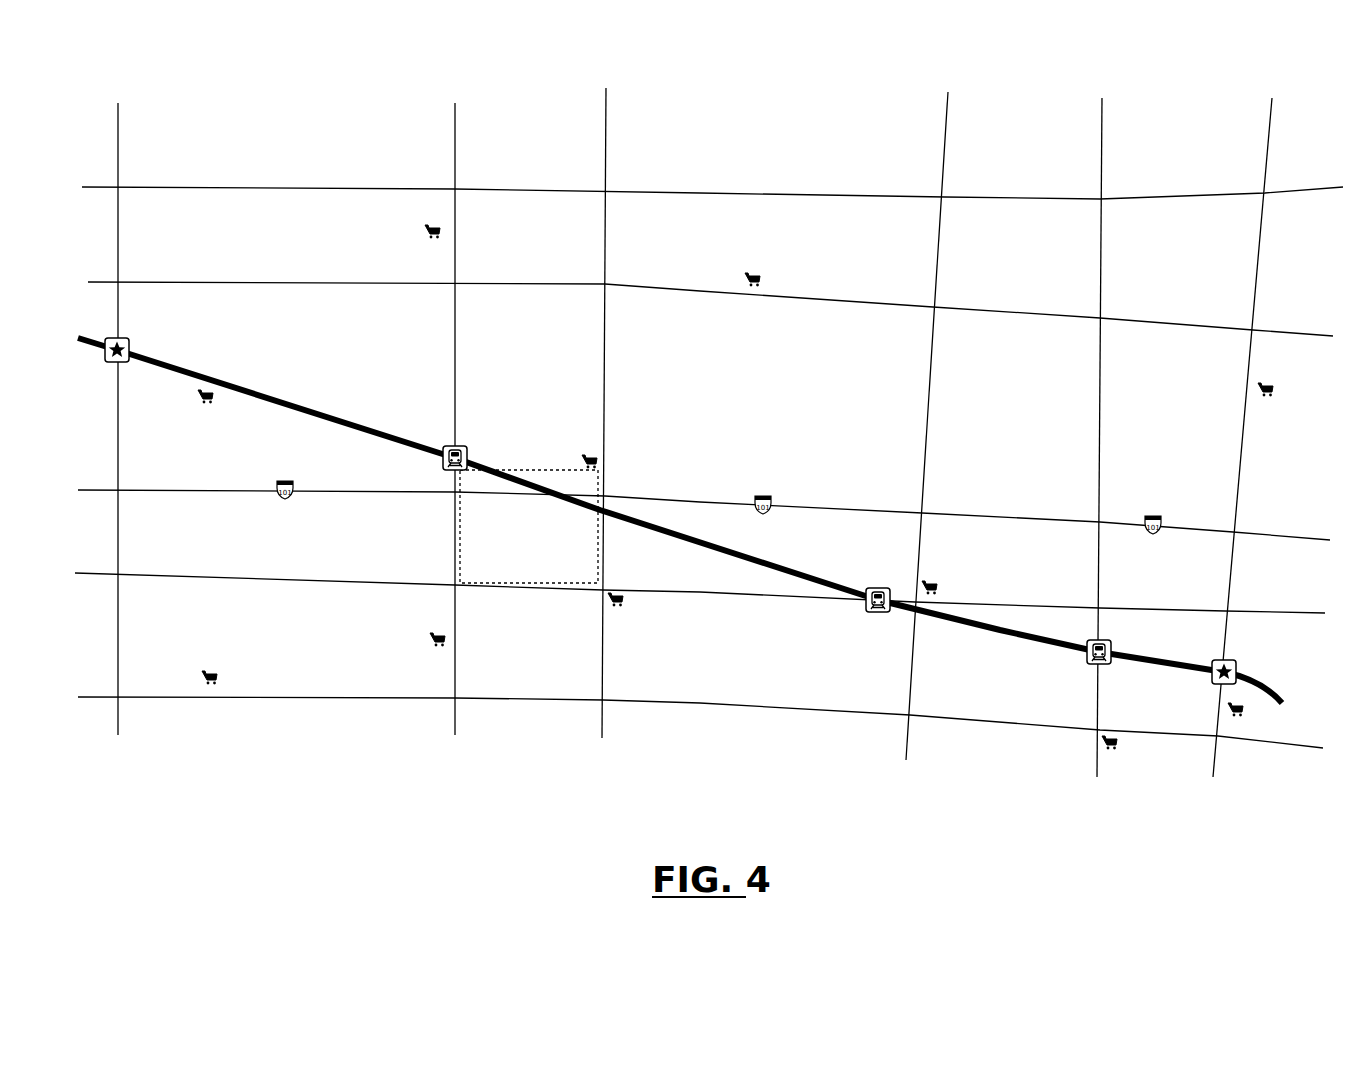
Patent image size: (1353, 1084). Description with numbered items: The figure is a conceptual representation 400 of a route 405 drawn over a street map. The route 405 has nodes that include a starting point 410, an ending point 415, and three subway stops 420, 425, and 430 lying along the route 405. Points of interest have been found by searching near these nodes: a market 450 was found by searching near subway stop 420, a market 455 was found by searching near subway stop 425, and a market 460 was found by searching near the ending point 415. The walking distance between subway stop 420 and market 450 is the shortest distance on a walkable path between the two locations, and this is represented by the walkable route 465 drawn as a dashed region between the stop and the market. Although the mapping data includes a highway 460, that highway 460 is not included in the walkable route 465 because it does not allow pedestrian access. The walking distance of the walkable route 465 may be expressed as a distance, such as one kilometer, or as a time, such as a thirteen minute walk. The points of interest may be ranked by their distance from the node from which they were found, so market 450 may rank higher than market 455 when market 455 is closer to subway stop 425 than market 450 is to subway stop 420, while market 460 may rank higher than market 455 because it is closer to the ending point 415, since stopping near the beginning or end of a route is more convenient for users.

The conceptual representation 400 is at (721, 824).
The route 405 is at (750, 565).
The starting point 410 is at (128, 338).
The ending point 415 is at (1235, 660).
The subway stop 420 is at (465, 447).
The subway stop 425 is at (881, 588).
The subway stop 430 is at (1110, 641).
The market 450 is at (585, 457).
The market 455 is at (937, 582).
The market / highway 460 is at (412, 492).
The walkable route 465 is at (535, 582).